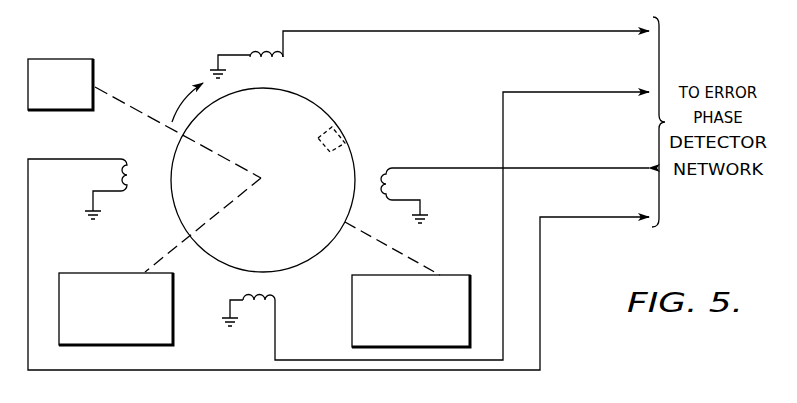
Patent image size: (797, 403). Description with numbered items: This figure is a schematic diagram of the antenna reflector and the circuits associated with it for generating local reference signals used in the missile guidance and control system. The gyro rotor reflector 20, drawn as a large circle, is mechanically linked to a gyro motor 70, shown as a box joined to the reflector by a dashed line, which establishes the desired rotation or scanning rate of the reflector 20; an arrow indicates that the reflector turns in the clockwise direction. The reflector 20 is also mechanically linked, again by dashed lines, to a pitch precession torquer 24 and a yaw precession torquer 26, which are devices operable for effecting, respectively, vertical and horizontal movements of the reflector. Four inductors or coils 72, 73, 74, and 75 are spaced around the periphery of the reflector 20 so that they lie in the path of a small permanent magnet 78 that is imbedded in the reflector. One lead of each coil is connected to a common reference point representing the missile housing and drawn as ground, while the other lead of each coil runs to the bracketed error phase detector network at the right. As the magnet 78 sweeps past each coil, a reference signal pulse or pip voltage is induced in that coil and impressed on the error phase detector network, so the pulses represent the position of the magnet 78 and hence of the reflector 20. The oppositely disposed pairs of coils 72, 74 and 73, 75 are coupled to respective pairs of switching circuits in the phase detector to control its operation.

The gyro rotor reflector 20 is at (308, 113).
The pitch precession torquer 24 is at (100, 340).
The yaw precession torquer 26 is at (455, 282).
The gyro motor 70 is at (65, 78).
The coil 72 is at (286, 60).
The coil 73 is at (397, 192).
The coil 74 is at (278, 298).
The coil 75 is at (150, 148).
The permanent magnet 78 is at (340, 143).